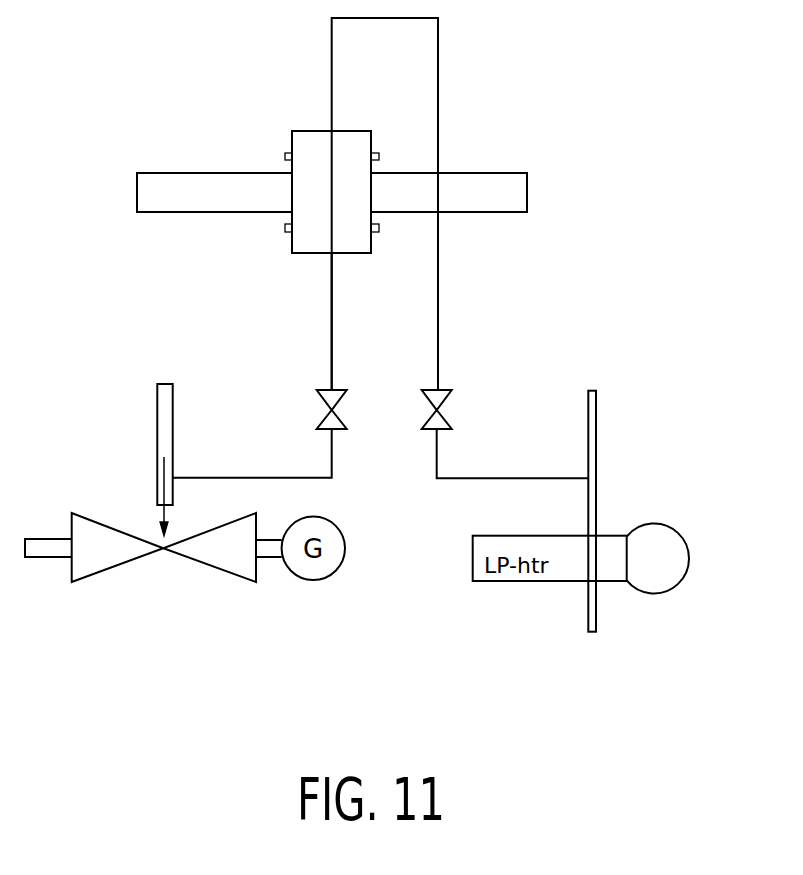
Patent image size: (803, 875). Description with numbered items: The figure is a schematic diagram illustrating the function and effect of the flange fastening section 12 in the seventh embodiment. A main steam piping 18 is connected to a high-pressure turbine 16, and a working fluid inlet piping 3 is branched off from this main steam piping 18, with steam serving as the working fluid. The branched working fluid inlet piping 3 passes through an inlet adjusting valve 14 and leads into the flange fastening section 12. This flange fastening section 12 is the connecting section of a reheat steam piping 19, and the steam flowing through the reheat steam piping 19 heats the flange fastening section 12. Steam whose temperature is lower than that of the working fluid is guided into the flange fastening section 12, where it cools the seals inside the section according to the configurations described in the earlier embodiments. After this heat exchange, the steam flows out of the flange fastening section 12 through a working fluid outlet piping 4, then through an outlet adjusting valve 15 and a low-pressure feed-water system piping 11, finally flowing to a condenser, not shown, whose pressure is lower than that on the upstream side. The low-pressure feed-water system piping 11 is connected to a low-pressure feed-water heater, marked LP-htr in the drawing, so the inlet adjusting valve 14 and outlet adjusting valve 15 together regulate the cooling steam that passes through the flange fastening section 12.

The working fluid inlet piping 3 is at (330, 283).
The working fluid outlet piping 4 is at (438, 50).
The low-pressure feed-water system piping 11 is at (590, 633).
The flange fastening section 12 is at (309, 128).
The inlet adjusting valve 14 is at (326, 388).
The outlet adjusting valve 15 is at (442, 387).
The high-pressure turbine 16 is at (202, 563).
The main steam piping 18 is at (157, 417).
The reheat steam piping 19 is at (491, 173).